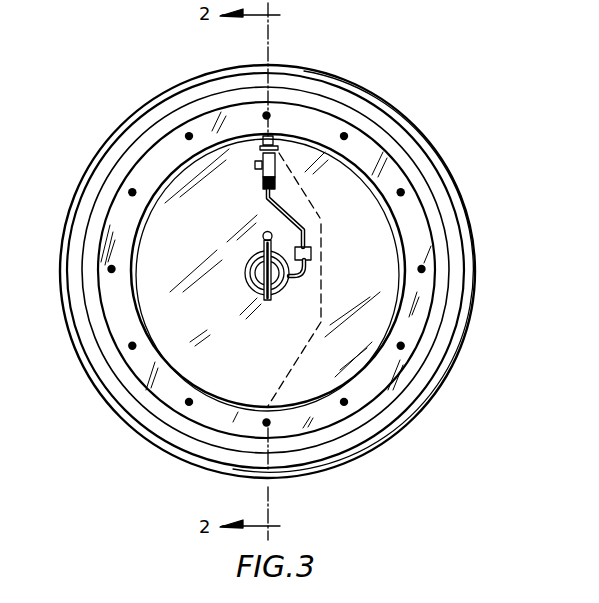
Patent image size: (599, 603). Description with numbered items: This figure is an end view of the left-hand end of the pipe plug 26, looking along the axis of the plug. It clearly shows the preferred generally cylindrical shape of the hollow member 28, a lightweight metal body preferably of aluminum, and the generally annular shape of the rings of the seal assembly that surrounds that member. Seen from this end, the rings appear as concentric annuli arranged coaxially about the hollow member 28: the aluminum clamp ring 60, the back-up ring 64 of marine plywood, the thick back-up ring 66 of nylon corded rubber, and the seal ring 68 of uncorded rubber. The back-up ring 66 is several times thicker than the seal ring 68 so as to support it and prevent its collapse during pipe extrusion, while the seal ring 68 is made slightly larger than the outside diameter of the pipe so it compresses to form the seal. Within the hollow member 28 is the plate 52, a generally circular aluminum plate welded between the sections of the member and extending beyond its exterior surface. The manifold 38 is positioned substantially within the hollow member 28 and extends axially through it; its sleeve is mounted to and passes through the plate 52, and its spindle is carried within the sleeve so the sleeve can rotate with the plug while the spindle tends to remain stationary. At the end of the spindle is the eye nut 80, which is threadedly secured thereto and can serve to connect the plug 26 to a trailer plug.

The pipe plug 26 is at (441, 106).
The hollow member 28 is at (402, 292).
The manifold 38 is at (248, 283).
The plate 52 is at (203, 246).
The clamp ring 60 is at (103, 223).
The back-up ring 64 is at (105, 178).
The back-up ring 66 is at (112, 145).
The seal ring 68 is at (127, 120).
The eye nut 80 is at (270, 300).